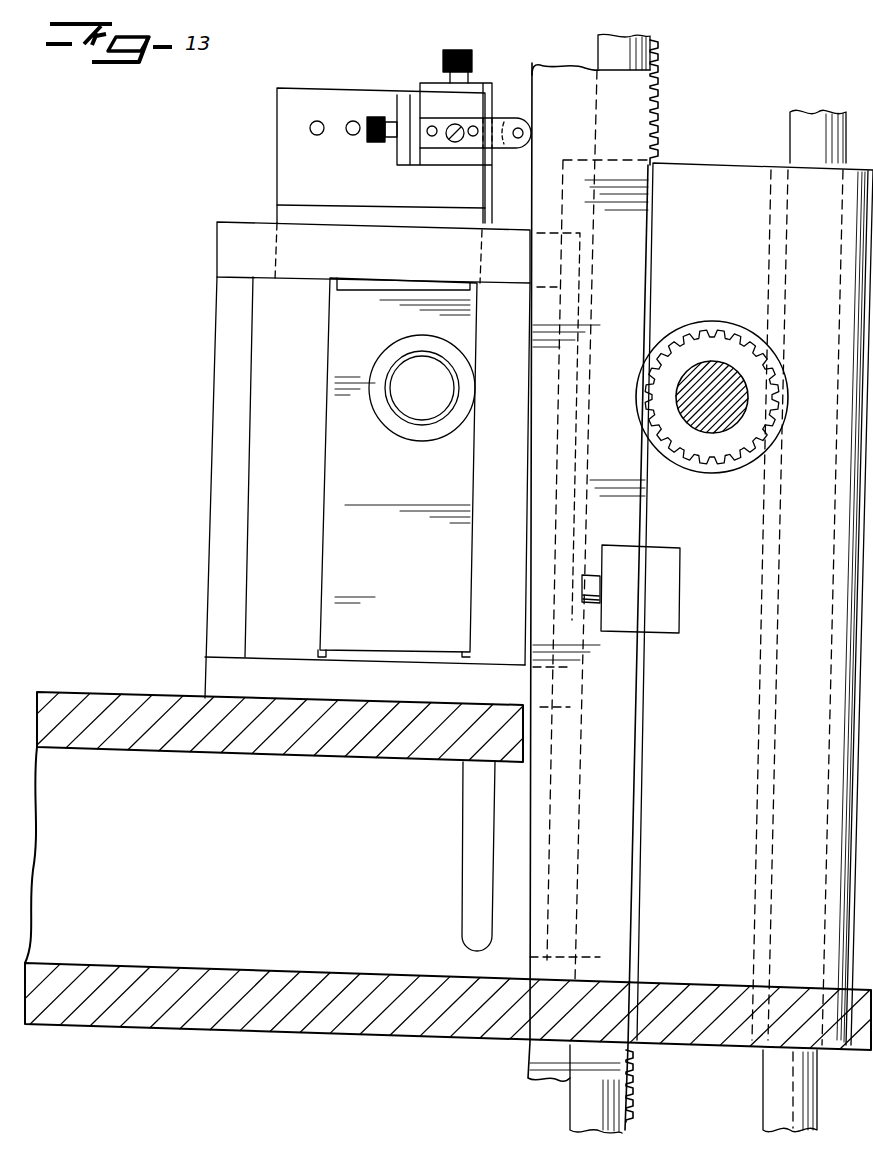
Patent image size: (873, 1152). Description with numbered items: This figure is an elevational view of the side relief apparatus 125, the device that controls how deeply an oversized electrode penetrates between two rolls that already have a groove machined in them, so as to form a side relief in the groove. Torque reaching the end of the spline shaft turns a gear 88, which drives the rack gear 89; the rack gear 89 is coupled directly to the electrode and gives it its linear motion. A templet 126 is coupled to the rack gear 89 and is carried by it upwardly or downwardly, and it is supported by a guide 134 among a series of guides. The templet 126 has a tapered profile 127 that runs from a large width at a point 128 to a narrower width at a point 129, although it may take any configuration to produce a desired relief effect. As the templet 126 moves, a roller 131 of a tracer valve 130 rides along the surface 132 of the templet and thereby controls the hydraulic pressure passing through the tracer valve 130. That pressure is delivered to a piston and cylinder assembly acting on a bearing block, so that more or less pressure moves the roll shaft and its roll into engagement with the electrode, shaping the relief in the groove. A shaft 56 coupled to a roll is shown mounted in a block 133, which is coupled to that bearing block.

The shaft 56 is at (411, 397).
The gear 88 is at (705, 343).
The rack gear 89 is at (625, 52).
The side relief apparatus 125 is at (231, 216).
The templet 126 is at (617, 108).
The tapered profile 127 is at (532, 210).
The point of large width 128 is at (635, 135).
The point of narrower width 129 is at (618, 924).
The tracer valve 130 is at (432, 105).
The roller 131 is at (514, 120).
The surface of the templet 132 is at (534, 62).
The block 133 is at (341, 481).
The guide 134 is at (665, 595).